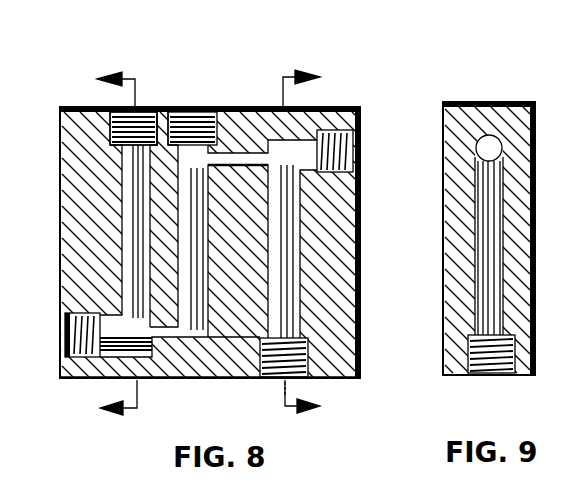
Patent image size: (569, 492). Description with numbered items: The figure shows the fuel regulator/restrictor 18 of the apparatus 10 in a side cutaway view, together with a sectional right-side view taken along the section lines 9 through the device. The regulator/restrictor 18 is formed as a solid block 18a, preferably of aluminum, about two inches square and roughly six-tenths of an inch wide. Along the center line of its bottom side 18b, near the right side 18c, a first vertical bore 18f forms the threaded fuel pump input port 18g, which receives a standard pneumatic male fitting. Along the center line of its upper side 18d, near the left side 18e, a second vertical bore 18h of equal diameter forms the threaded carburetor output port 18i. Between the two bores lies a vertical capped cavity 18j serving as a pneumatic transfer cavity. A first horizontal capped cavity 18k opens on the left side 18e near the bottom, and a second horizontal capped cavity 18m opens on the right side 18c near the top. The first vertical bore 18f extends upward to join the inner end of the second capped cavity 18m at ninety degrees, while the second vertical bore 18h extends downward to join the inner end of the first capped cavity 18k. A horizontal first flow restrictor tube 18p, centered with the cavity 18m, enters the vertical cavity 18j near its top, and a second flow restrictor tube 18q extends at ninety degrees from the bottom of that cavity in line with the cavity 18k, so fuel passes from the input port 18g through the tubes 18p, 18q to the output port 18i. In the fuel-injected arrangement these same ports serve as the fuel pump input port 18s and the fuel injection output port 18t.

In FIG. 8, the section lines 9— 9 is at (311, 241).
In FIG. 8, the apparatus 10 is at (102, 245).
In FIG. 8, the fuel regulator/restrictor 18 is at (211, 96).
In FIG. 8, the solid block 18a is at (360, 108).
In FIG. 8, the bottom side 18b is at (248, 380).
In FIG. 8, the right side 18c is at (358, 230).
In FIG. 8, the upper side 18d is at (254, 108).
In FIG. 9, the upper side 18d is at (493, 97).
In FIG. 8, the left side 18e is at (62, 232).
In FIG. 8, the first vertical bore 18f is at (296, 299).
In FIG. 9, the first vertical bore 18f is at (484, 295).
In FIG. 8, the fuel pump input port 18g is at (273, 380).
In FIG. 9, the fuel pump input port 18g is at (494, 375).
In FIG. 8, the second vertical bore 18h is at (127, 259).
In FIG. 8, the carburetor output port 18i is at (145, 106).
In FIG. 8, the vertical capped cavity 18j is at (192, 106).
In FIG. 8, the first horizontal capped cavity 18k is at (65, 336).
In FIG. 8, the second horizontal capped cavity 18m is at (358, 150).
In FIG. 9, the second horizontal capped cavity 18m is at (478, 154).
In FIG. 8, the first flow restrictor tube 18p is at (250, 170).
In FIG. 8, the second flow restrictor tube 18q is at (183, 328).
In FIG. 8, the fuel pump input port 18s is at (263, 411).
In FIG. 8, the fuel injection output port 18t is at (124, 78).